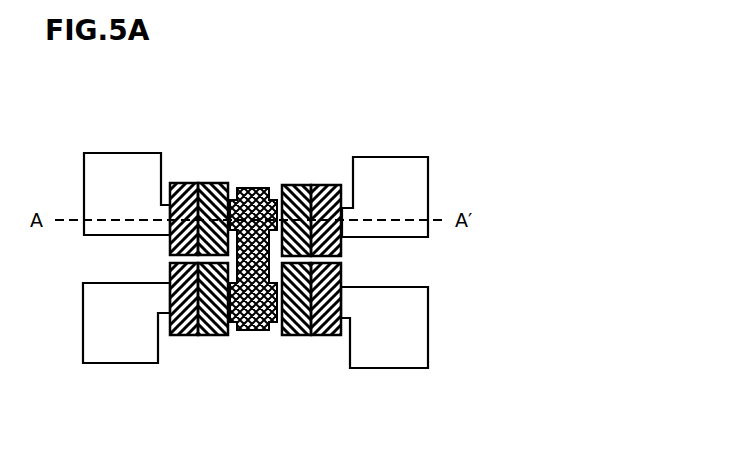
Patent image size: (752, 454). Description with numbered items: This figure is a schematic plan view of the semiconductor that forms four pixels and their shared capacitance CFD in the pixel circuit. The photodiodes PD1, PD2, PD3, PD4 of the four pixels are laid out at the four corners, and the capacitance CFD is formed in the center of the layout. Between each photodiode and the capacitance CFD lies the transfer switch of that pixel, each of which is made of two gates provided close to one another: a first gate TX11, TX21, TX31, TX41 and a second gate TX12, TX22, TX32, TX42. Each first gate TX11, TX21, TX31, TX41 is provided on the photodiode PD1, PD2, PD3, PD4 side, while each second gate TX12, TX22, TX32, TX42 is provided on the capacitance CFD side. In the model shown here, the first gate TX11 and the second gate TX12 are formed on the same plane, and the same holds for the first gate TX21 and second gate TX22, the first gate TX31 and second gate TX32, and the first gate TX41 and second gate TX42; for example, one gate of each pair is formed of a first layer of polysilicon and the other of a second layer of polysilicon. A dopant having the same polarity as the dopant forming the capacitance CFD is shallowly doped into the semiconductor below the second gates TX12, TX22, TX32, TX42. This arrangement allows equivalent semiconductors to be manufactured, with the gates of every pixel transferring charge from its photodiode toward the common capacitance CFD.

The photodiode PD1 is at (121, 168).
The photodiode PD2 is at (389, 173).
The photodiode PD3 is at (117, 346).
The photodiode PD4 is at (388, 350).
The first gate TX11 is at (174, 188).
The second gate TX12 is at (224, 171).
The first gate TX21 is at (320, 191).
The second gate TX22 is at (307, 171).
The first gate TX31 is at (170, 341).
The second gate TX32 is at (221, 329).
The first gate TX41 is at (320, 329).
The second gate TX42 is at (297, 342).
The capacitance CFD is at (254, 231).